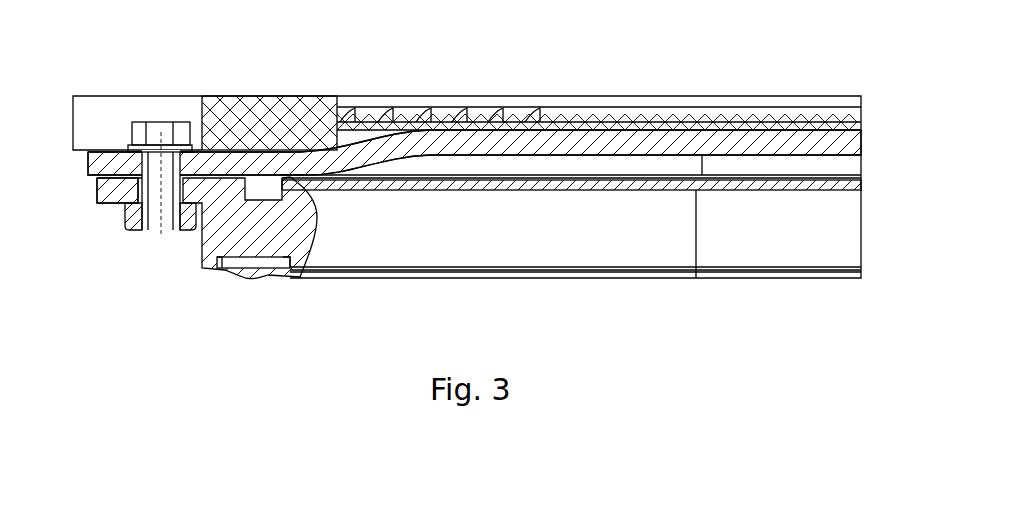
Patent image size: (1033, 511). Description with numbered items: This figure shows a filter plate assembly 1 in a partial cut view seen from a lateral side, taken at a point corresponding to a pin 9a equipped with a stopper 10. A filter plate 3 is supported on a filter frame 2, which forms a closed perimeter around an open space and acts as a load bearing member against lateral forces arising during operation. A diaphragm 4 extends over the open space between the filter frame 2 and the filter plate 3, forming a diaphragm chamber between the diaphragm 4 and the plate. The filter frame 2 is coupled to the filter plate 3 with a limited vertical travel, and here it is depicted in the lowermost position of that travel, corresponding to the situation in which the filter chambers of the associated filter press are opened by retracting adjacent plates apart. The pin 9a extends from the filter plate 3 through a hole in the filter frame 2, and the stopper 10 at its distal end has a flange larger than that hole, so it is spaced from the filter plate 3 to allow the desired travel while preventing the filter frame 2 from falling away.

The filter plate assembly 1 is at (605, 357).
The filter frame 2 is at (317, 223).
The filter plate 3 is at (683, 143).
The diaphragm 4 is at (808, 190).
The pin 9a is at (165, 208).
The stopper 10 is at (128, 229).